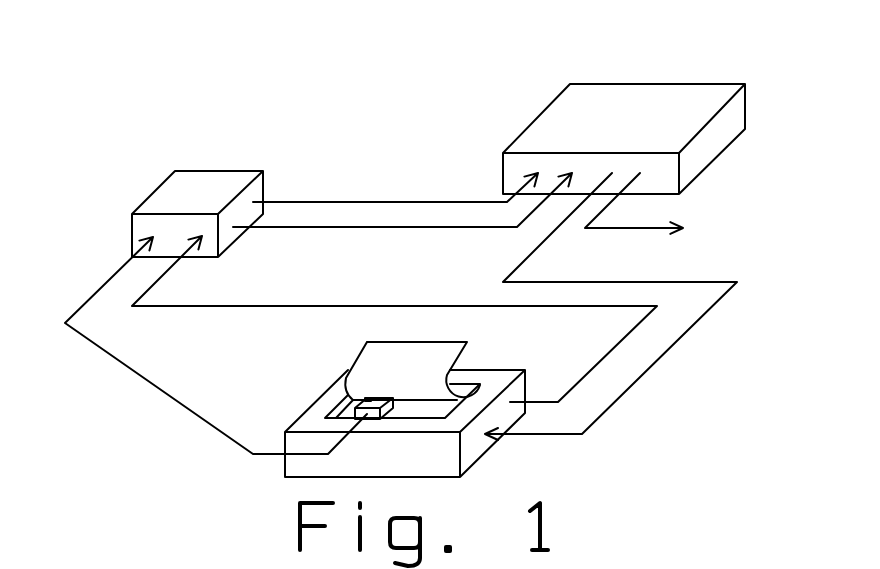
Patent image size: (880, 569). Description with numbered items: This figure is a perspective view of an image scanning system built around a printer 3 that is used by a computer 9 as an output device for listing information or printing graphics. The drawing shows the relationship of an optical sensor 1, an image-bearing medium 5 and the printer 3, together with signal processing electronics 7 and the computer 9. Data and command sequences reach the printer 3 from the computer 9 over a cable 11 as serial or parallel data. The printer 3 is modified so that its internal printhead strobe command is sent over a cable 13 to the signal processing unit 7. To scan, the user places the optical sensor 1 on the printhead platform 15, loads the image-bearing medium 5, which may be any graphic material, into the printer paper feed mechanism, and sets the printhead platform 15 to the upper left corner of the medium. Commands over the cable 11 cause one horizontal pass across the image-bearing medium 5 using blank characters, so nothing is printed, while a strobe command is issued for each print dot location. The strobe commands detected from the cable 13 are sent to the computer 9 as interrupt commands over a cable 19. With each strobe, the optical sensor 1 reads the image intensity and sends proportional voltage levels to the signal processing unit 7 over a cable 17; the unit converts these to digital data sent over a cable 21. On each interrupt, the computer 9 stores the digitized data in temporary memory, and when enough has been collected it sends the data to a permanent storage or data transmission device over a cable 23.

The optical sensor 1 is at (368, 399).
The printer 3 is at (527, 377).
The image-bearing medium 5 is at (358, 357).
The signal processing electronics 7 is at (168, 177).
The computer 9 is at (553, 102).
The cable 11 is at (652, 367).
The cable 13 is at (242, 307).
The printhead platform 15 is at (377, 400).
The cable 17 is at (178, 403).
The cable 19 is at (345, 228).
The cable 21 is at (393, 201).
The cable 23 is at (677, 235).